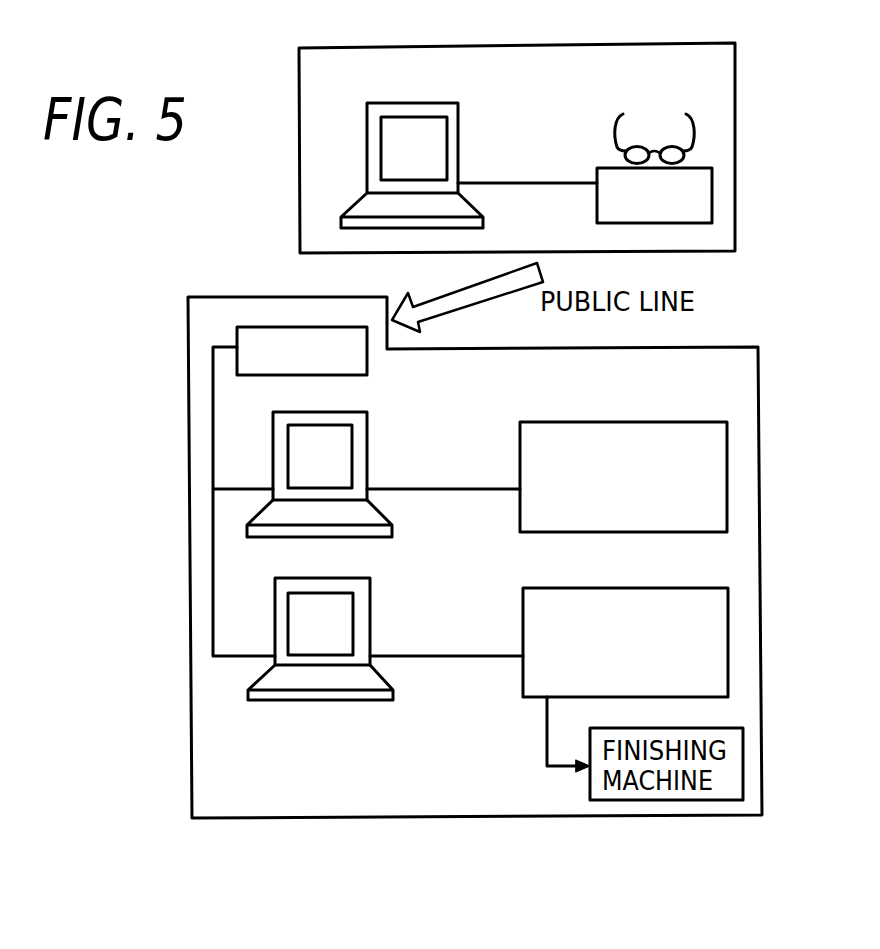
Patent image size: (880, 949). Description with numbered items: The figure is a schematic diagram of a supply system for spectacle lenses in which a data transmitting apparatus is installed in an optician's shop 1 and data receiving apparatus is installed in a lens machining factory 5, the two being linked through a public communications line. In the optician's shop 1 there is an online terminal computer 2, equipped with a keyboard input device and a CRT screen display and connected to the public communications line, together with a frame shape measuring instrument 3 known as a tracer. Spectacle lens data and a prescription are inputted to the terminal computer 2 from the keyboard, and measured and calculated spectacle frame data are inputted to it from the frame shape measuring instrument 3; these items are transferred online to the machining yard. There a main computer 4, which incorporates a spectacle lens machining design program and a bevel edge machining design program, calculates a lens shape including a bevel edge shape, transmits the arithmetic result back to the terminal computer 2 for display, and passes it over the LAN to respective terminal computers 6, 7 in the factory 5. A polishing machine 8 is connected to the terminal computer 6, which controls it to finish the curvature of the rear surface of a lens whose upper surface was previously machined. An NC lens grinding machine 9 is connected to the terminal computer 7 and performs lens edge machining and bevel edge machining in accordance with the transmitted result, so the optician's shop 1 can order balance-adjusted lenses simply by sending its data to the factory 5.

The optician's shop 1 is at (452, 50).
The terminal computer 2 is at (442, 132).
The frame shape measuring instrument 3 is at (603, 173).
The main computer 4 is at (365, 363).
The factory 5 is at (187, 337).
The terminal computer 6 is at (347, 452).
The terminal computer 7 is at (350, 612).
The polishing machine 8 is at (637, 423).
The NC lens grinding machine 9 is at (667, 590).